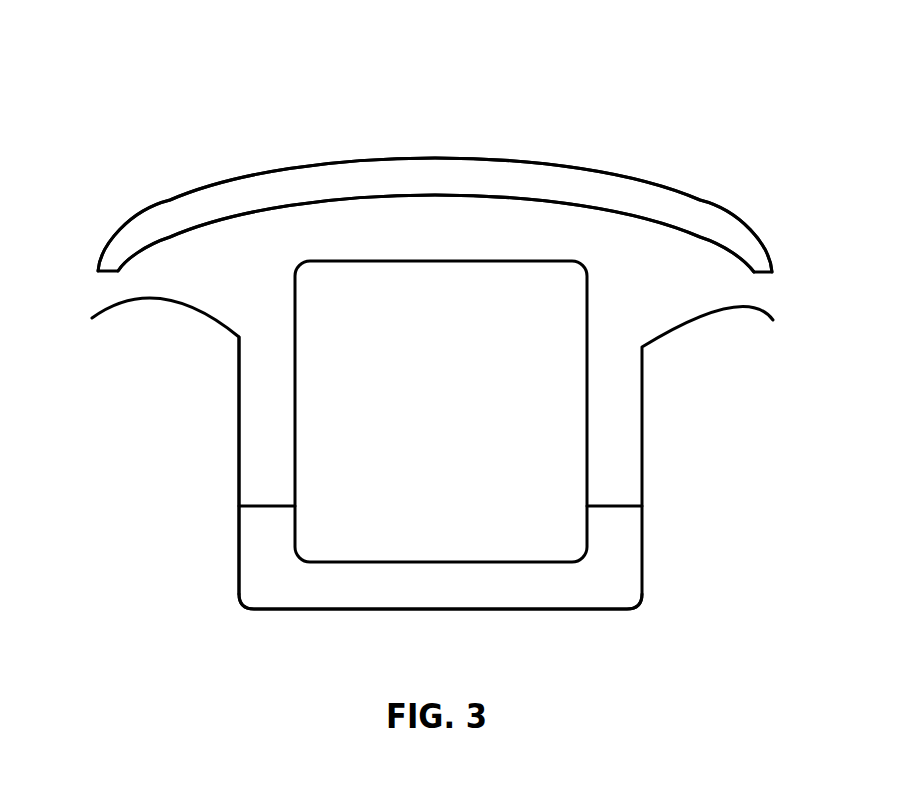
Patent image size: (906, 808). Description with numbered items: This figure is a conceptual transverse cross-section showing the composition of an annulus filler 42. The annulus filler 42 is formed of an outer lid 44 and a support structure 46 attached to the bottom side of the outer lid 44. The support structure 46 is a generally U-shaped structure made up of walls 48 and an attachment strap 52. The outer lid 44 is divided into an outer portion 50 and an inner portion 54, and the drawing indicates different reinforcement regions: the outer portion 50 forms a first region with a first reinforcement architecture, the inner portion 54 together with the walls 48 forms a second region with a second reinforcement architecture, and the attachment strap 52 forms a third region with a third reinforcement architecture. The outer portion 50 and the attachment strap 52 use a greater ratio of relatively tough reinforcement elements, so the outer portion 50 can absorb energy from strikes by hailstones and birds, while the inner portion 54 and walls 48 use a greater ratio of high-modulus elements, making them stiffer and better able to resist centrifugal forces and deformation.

The annulus filler 42 is at (97, 98).
The outer lid 44 is at (357, 153).
The support structure 46 is at (645, 417).
The walls 48 is at (250, 402).
The outer portion 50 is at (190, 205).
The attachment strap 52 is at (262, 593).
The inner portion 54 is at (557, 230).